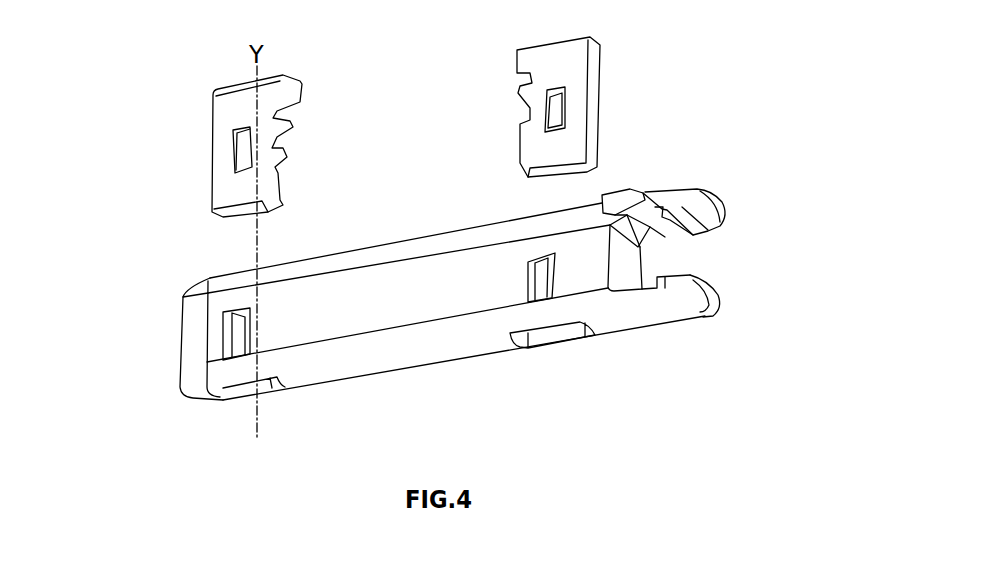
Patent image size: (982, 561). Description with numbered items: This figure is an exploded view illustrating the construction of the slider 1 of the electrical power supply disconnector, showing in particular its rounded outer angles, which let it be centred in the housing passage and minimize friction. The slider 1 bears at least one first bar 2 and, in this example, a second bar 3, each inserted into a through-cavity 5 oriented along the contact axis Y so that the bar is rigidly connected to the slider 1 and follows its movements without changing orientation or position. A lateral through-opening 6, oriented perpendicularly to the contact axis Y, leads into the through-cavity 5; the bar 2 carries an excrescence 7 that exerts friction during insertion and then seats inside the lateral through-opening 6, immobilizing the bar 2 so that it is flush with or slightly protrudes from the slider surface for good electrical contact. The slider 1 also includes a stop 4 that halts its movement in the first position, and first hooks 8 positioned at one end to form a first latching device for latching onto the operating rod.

The slider 1 is at (403, 292).
The first bar 2 is at (228, 194).
The second bar 3 is at (573, 70).
The stop 4 is at (620, 197).
The through-cavity 5 is at (243, 392).
The lateral through-opening 6 is at (240, 333).
The excrescence 7 is at (245, 157).
The first hooks 8 is at (672, 273).